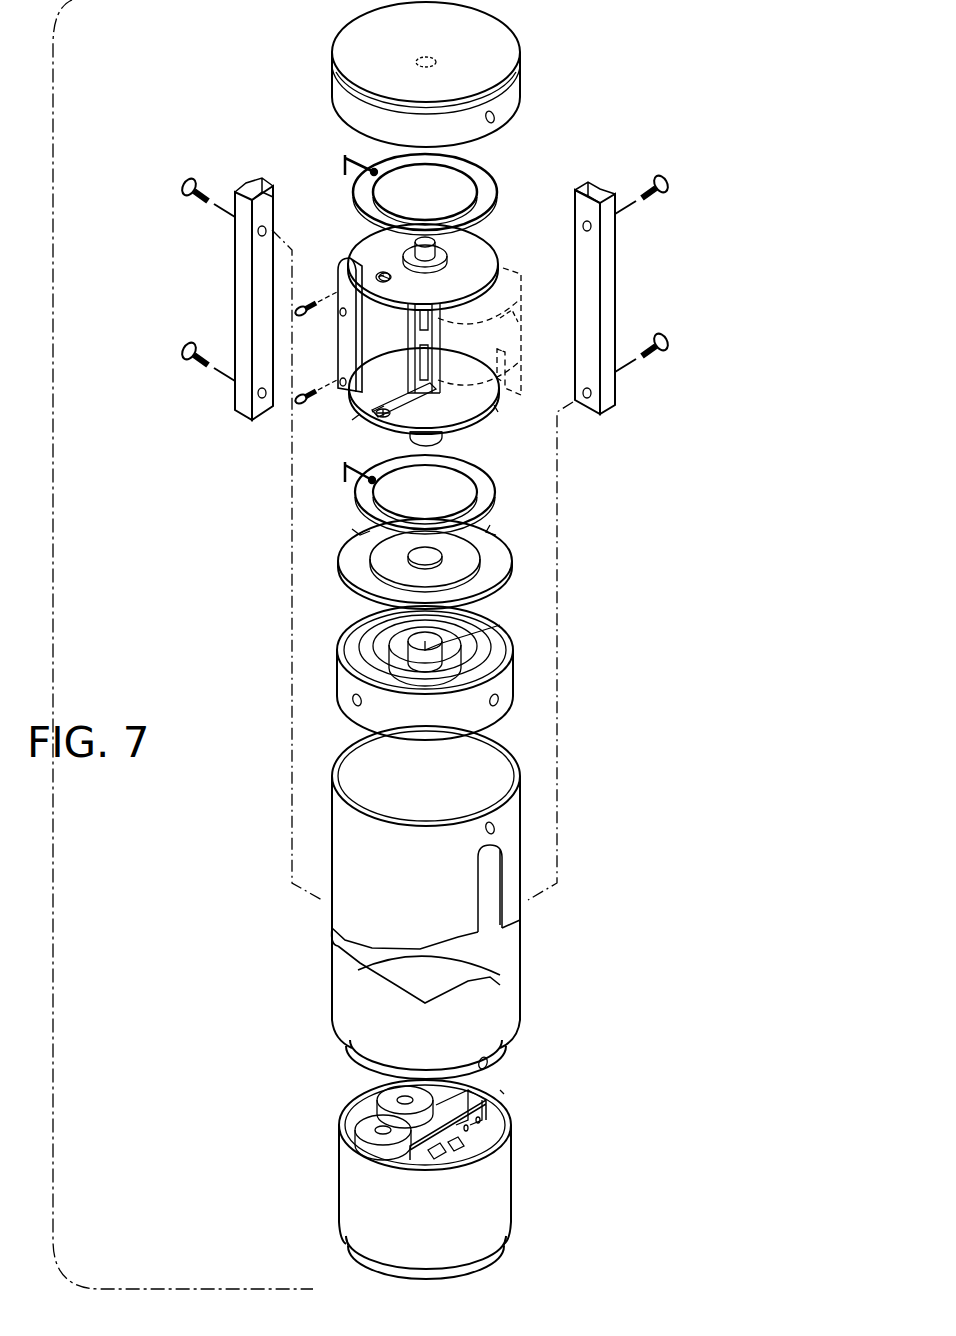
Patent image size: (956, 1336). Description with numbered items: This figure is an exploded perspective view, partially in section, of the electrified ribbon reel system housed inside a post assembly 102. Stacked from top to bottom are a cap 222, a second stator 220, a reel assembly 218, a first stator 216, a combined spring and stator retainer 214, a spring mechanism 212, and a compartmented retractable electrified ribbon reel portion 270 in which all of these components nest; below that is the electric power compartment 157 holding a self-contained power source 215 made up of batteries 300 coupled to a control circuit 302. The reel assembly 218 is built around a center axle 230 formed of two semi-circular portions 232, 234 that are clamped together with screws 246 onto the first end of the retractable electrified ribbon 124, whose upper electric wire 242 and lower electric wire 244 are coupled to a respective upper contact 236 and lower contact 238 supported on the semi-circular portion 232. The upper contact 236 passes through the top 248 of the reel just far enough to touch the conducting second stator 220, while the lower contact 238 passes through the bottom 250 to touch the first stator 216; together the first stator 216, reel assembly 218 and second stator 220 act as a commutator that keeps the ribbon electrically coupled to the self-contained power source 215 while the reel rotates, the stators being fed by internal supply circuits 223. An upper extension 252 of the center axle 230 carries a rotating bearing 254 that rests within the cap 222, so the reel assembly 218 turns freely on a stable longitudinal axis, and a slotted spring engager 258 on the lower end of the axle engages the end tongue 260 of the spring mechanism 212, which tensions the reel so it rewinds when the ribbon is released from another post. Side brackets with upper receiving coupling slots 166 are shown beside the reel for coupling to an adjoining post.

The post assembly 102 is at (573, 920).
The retractable electrified ribbon 124 is at (521, 268).
The electric power compartment 157 is at (515, 1193).
The upper receiving coupling slot 166 is at (235, 262).
The spring mechanism 212 is at (513, 692).
The combined spring and stator retainer 214 is at (512, 578).
The self-contained power source 215 is at (500, 1090).
The first stator 216 is at (485, 492).
The reel assembly 218 is at (496, 408).
The second stator 220 is at (478, 175).
The cap 222 is at (520, 65).
The internal supply circuit 223 is at (348, 155).
The center axle 230 is at (384, 270).
The semi-circular portion 232 is at (355, 420).
The semi-circular portion 234 is at (340, 340).
The upper contact 236 is at (378, 277).
The lower contact 238 is at (378, 410).
The upper electric wire 242 is at (508, 316).
The lower electric wire 244 is at (500, 347).
The screws 246 is at (300, 312).
The top 248 is at (443, 299).
The bottom 250 is at (460, 425).
The upper extension 252 is at (436, 244).
The rotating bearing 254 is at (447, 258).
The slotted spring engager 258 is at (500, 435).
The end tongue 260 is at (500, 625).
The compartmented retractable electrified ribbon reel portion 270 is at (588, 840).
The batteries 300 is at (360, 1120).
The control circuit 302 is at (486, 1118).